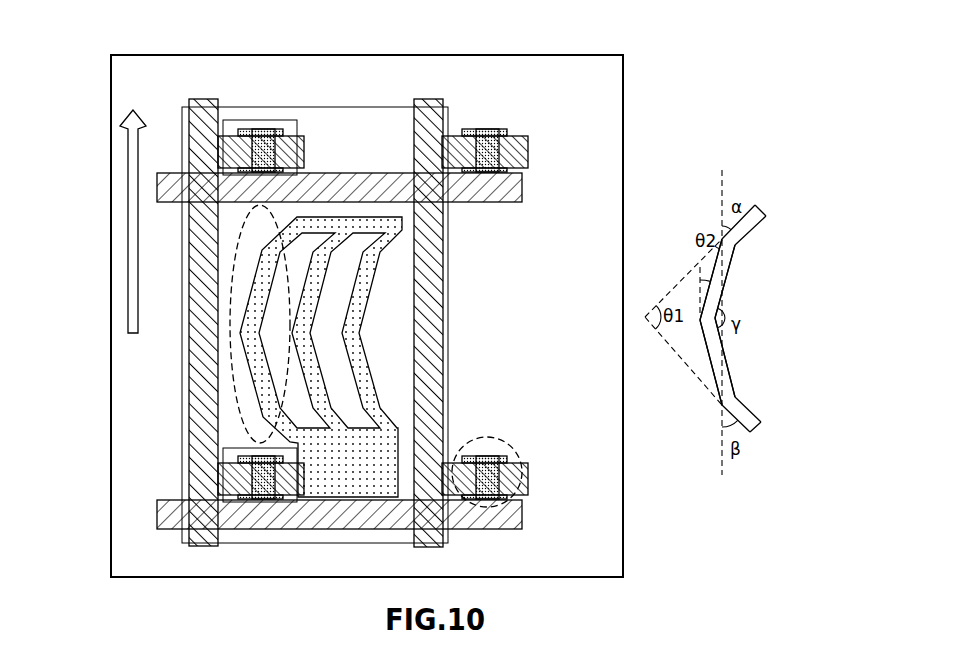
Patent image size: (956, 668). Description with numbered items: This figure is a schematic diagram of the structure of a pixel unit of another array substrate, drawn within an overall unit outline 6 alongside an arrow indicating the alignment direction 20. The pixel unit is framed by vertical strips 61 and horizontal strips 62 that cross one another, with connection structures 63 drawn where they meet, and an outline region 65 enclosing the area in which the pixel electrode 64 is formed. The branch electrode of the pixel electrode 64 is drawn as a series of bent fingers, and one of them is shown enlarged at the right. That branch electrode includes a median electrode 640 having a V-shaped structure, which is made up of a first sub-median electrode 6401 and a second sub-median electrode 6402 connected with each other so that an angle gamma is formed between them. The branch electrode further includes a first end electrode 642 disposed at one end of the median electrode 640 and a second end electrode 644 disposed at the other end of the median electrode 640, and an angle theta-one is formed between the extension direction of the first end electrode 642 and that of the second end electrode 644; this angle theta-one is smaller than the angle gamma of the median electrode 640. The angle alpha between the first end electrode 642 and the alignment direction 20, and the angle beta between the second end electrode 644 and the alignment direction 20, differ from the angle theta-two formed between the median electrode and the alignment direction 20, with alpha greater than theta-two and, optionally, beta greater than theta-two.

The display module 6 is at (413, 67).
The alignment direction 20 is at (130, 158).
The vertical support bars 61 is at (413, 112).
The horizontal support bars 62 is at (493, 197).
The fastening bolt 63 is at (518, 455).
The pixel electrode 64 is at (403, 220).
The frame plate 65 is at (448, 307).
The median electrode 640 is at (357, 320).
The first end electrode 642 is at (378, 245).
The second end electrode 644 is at (380, 417).
The first sub-median electrode 6401 is at (717, 281).
The second sub-median electrode 6402 is at (717, 350).